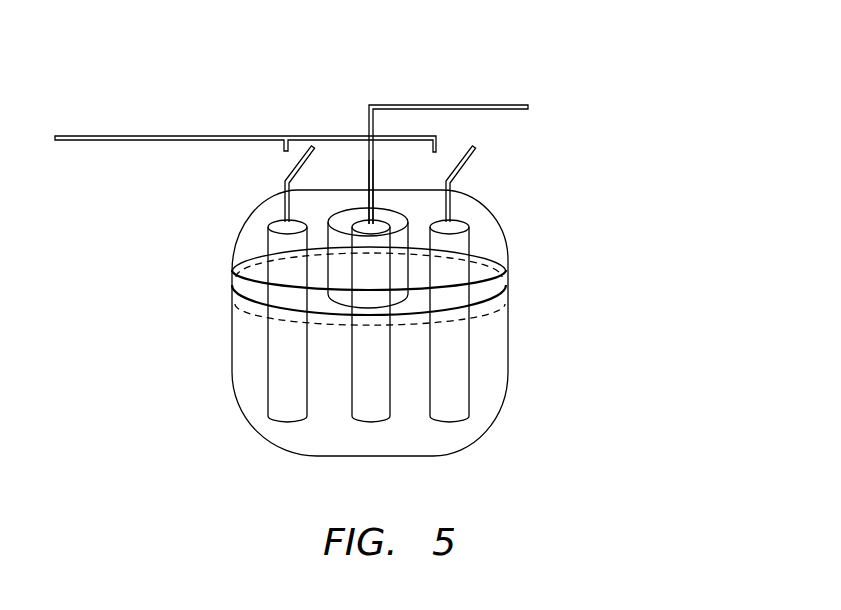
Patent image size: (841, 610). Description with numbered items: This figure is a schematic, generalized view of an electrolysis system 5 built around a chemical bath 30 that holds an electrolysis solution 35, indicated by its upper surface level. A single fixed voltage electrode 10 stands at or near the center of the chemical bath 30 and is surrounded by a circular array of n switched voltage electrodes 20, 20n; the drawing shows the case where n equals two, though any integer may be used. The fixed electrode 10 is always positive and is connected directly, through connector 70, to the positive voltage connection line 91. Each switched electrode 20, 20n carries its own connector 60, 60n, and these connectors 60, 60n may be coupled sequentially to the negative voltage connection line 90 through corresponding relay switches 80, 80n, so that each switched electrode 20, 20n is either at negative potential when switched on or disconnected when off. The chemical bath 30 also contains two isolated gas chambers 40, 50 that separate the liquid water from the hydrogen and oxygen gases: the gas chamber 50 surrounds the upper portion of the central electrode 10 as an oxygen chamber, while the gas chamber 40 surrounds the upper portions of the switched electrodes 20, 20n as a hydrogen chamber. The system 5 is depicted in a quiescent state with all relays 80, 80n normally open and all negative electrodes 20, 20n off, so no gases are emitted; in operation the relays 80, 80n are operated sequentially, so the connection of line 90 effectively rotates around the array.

The electrolysis system 5 is at (407, 75).
The fixed voltage electrode 10 is at (392, 337).
The switched voltage electrode 20 is at (268, 348).
The nth switched voltage electrode 20n is at (470, 332).
The chemical bath 30 is at (488, 370).
The electrolysis solution 35 is at (502, 303).
The gas chamber 40 is at (247, 285).
The gas chamber 50 is at (344, 207).
The connector 60 is at (284, 211).
The nth connector 60n is at (455, 216).
The connector 70 is at (374, 162).
The relay switch 80 is at (285, 174).
The nth relay switch 80n is at (466, 160).
The negative voltage connection line 90 is at (122, 136).
The positive voltage connection line 91 is at (502, 105).